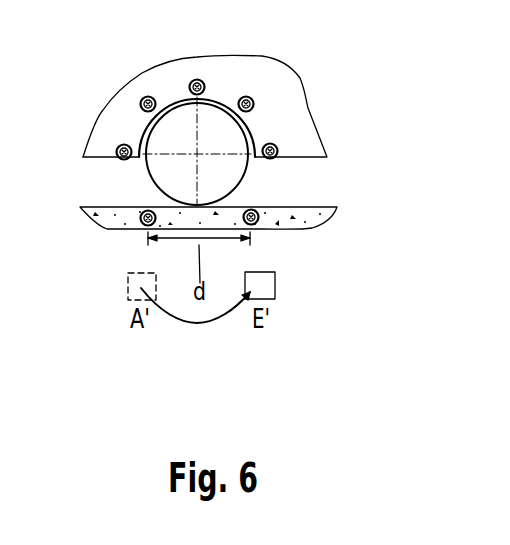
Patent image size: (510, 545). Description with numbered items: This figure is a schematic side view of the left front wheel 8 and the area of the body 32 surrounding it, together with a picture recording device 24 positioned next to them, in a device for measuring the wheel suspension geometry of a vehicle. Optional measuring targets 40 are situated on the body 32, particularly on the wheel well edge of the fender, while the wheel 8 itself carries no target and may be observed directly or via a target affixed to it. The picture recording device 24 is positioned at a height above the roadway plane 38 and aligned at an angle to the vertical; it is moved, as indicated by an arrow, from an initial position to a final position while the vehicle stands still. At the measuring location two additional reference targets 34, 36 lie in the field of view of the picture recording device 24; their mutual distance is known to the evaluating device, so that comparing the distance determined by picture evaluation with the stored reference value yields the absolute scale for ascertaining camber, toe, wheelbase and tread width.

The left front wheel 8 is at (233, 173).
The picture recording device 24 is at (268, 285).
The body 32 is at (307, 137).
The reference target 34 is at (145, 225).
The reference target 36 is at (258, 218).
The roadway plane 38 is at (86, 217).
The measuring targets 40 is at (240, 99).